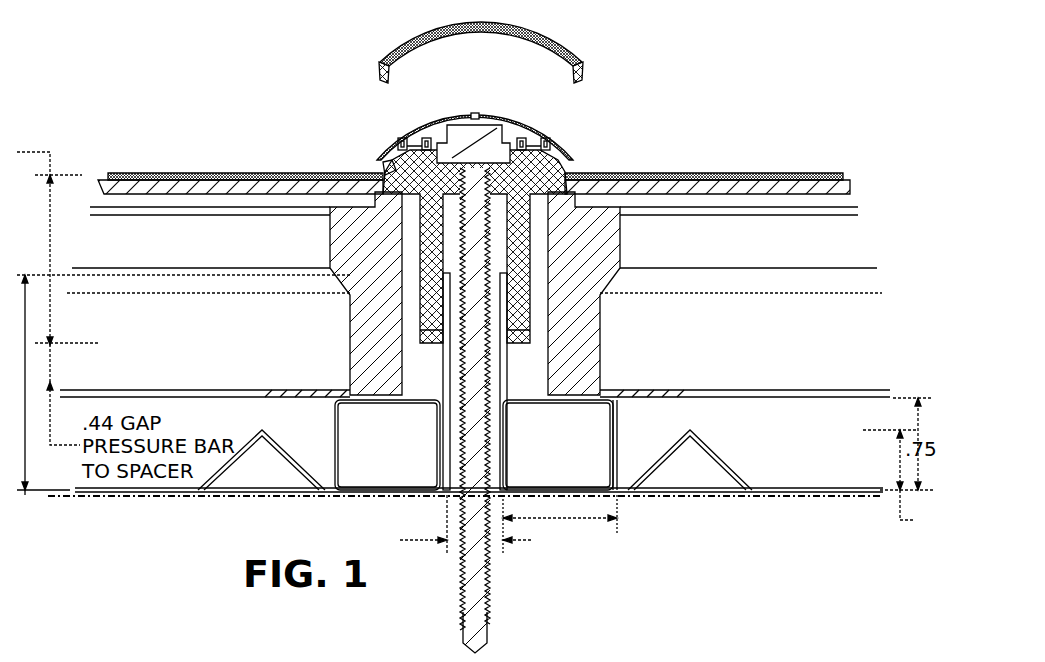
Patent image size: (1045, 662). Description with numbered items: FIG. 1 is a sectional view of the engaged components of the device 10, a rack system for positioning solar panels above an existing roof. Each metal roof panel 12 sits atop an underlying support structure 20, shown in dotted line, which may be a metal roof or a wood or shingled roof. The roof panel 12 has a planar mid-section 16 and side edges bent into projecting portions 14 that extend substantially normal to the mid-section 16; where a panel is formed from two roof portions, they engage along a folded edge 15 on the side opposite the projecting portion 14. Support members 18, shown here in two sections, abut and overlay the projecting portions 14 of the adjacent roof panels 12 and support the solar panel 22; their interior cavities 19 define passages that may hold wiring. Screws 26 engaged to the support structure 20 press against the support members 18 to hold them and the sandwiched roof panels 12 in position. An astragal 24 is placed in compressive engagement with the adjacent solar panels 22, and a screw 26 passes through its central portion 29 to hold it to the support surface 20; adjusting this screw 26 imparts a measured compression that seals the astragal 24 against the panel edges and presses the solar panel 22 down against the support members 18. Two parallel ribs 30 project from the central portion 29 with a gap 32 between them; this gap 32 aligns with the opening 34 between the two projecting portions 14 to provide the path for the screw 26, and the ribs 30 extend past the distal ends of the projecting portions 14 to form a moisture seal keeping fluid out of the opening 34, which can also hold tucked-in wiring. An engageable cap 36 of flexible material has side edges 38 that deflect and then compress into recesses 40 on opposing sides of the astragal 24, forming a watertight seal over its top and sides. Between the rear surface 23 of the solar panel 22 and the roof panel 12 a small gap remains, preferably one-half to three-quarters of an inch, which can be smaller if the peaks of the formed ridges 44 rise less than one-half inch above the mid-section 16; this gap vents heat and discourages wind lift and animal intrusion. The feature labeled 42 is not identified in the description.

The device 10 is at (700, 117).
The metal roof panel 12 is at (752, 493).
The projecting portion 14 is at (540, 288).
The folded edge 15 is at (443, 273).
The planar mid-section 16 is at (133, 492).
The support member 18 is at (335, 445).
The interior cavity 19 is at (396, 452).
The underlying support structure 20 is at (703, 497).
The solar panel 22 is at (207, 188).
The rear surface 23 is at (223, 392).
The astragal 24 is at (488, 116).
The screw 26 is at (483, 590).
The central portion 29 is at (450, 125).
The parallel ribs 30 is at (428, 322).
The gap 32 is at (570, 178).
The opening 34 is at (447, 503).
The engageable cap 36 is at (577, 53).
The side edges 38 is at (390, 72).
The recesses 40 is at (373, 165).
The bracket 42 is at (397, 165).
The formed ridges 44 is at (262, 431).